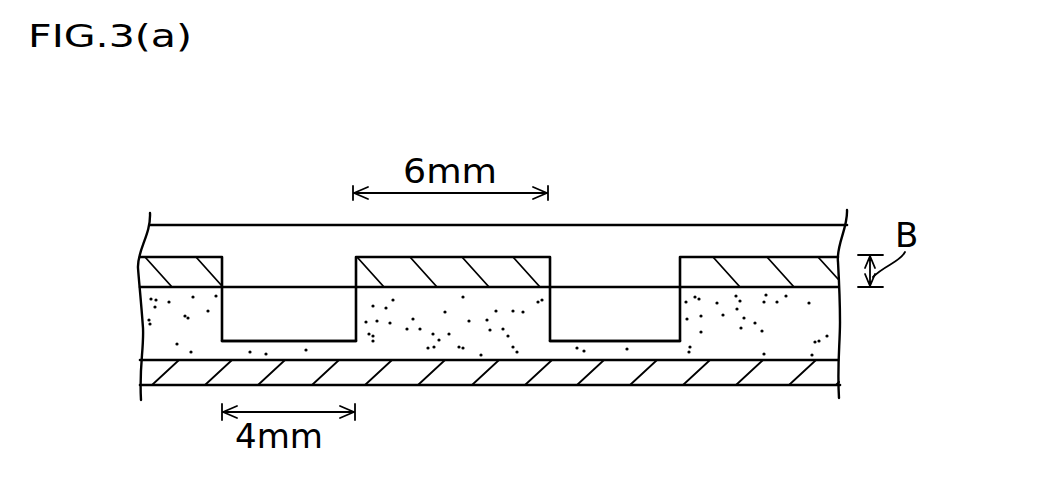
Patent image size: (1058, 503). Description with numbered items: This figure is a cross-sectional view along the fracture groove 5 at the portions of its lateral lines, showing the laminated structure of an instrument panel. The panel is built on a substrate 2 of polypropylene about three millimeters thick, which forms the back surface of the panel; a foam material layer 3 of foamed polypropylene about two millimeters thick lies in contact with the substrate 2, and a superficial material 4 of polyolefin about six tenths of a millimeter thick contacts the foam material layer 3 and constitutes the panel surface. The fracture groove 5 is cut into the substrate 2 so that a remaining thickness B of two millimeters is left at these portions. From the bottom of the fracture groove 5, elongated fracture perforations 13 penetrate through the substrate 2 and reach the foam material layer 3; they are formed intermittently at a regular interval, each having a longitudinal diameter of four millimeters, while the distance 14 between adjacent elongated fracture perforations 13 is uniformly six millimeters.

The substrate 2 is at (150, 272).
The foam material layer 3 is at (162, 326).
The superficial material 4 is at (152, 372).
The fracture groove 5 is at (722, 241).
The elongated fracture perforations 13 is at (283, 306).
The distance between elongated fracture perforations 14 is at (475, 258).